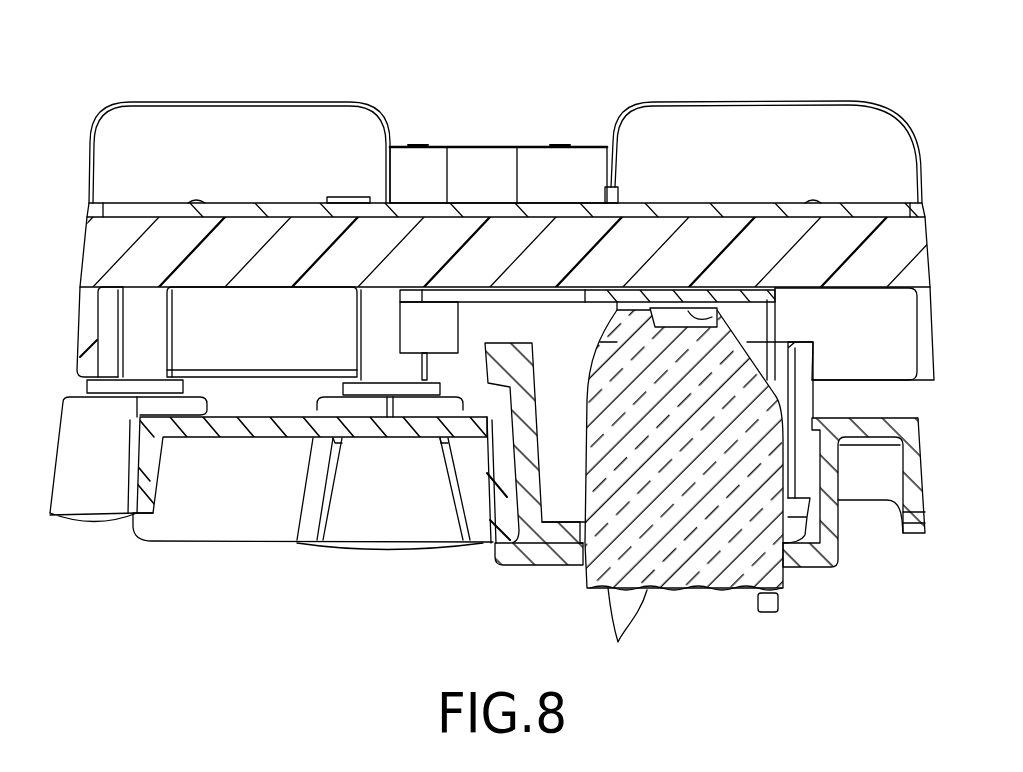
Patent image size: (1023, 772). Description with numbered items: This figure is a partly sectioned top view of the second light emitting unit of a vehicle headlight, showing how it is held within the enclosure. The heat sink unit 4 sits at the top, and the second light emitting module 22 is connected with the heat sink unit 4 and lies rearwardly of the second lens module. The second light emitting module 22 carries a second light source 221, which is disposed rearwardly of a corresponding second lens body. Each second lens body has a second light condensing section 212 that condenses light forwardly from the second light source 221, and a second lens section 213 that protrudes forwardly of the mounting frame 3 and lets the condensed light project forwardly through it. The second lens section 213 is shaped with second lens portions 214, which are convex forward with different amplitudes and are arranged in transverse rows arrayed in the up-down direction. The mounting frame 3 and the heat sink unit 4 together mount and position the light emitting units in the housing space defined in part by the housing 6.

The heat sink unit 4 is at (831, 143).
The second light emitting module 22 is at (777, 289).
The second light source 221 is at (700, 318).
The second light condensing section 212 is at (705, 412).
The second lens section 213 is at (723, 600).
The second lens portion 214 is at (618, 632).
The housing 6 is at (210, 520).
The mounting frame 3 is at (494, 543).